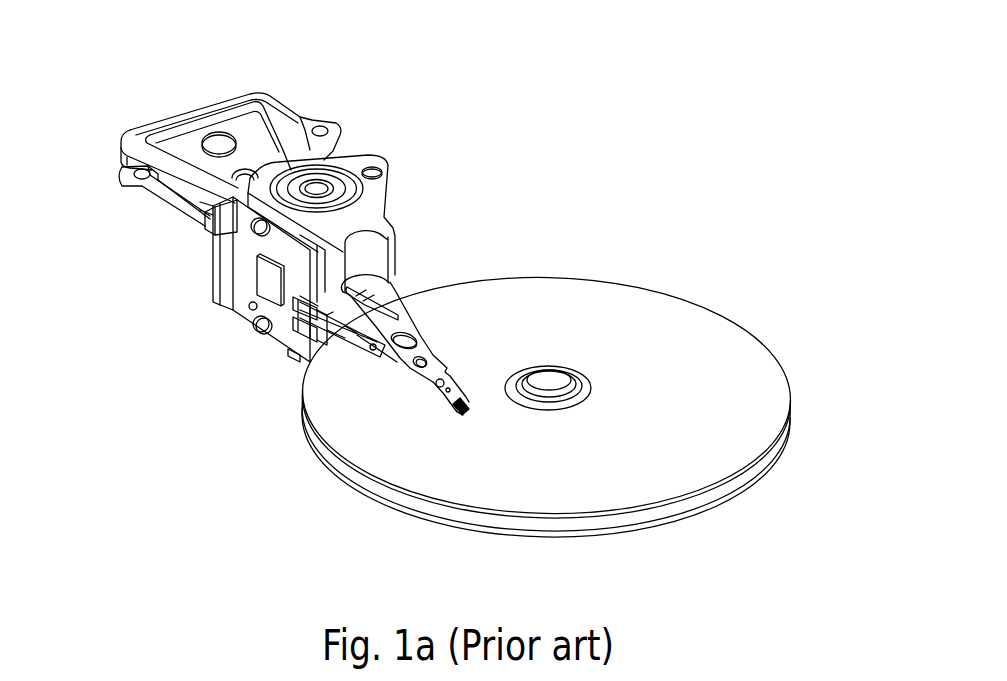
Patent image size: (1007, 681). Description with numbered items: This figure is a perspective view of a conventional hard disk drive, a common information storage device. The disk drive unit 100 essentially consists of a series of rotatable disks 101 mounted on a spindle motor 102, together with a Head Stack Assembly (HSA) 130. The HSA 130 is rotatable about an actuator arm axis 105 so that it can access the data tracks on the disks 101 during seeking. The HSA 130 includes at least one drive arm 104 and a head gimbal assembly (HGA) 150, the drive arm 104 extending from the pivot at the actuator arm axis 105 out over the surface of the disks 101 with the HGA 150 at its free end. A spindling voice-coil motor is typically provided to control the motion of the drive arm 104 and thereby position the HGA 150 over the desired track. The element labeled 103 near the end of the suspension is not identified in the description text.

The disk drive unit 100 is at (410, 276).
The rotatable disks 101 is at (673, 370).
The spindle motor 102 is at (555, 382).
The slider 103 is at (459, 401).
The drive arm 104 is at (402, 322).
The actuator arm axis 105 is at (320, 190).
The head stack assembly 130 is at (303, 207).
The head gimbal assembly 150 is at (435, 363).